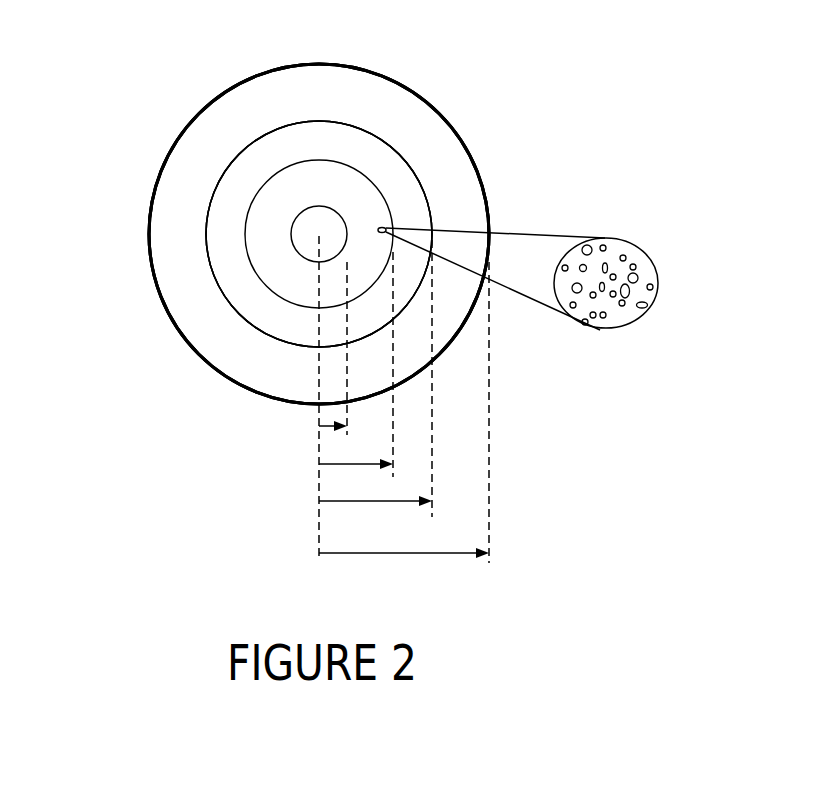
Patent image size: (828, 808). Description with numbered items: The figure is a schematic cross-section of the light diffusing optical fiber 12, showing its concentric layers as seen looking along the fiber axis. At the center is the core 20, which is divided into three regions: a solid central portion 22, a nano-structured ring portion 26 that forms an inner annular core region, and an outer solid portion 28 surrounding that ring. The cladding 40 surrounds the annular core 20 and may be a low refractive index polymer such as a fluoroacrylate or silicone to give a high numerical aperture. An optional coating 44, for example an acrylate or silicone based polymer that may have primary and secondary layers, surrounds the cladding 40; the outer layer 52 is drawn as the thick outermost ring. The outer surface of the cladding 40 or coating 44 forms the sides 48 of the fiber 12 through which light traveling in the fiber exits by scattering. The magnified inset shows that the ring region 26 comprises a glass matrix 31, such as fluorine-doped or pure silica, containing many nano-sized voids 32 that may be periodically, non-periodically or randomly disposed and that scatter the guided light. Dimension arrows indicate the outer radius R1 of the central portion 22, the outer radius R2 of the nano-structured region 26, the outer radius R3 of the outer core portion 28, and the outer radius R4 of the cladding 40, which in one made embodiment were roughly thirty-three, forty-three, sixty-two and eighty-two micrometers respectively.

The light diffusing optical fiber 12 is at (168, 95).
The sides of fiber 48 is at (142, 187).
The outer coating layer 52 is at (446, 122).
The coating 44 is at (404, 72).
The cladding region 40 is at (413, 121).
The outer solid portion 28 is at (372, 157).
The nano-structured ring portion 26 is at (365, 190).
The solid central portion 22 is at (332, 227).
The core 20 is at (590, 97).
The glass matrix 31 is at (620, 253).
The voids 32 is at (594, 317).
The outer radius of first core region R1 is at (322, 426).
The outer radius of nano-structured region R2 is at (347, 466).
The outer radius of third core region R3 is at (353, 503).
The outer radius of cladding R4 is at (378, 554).